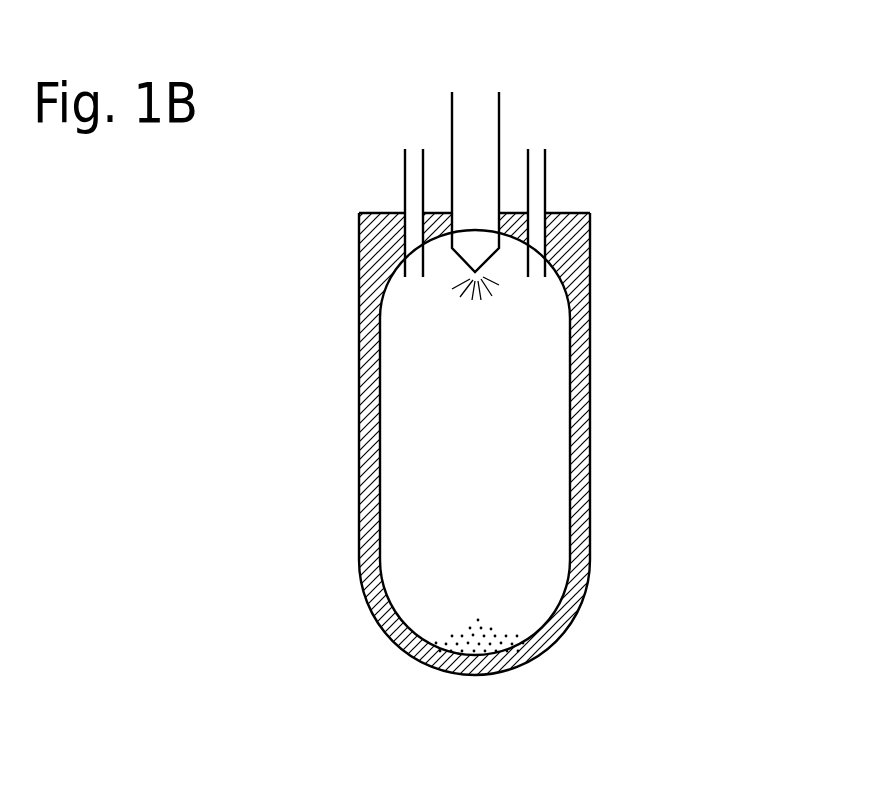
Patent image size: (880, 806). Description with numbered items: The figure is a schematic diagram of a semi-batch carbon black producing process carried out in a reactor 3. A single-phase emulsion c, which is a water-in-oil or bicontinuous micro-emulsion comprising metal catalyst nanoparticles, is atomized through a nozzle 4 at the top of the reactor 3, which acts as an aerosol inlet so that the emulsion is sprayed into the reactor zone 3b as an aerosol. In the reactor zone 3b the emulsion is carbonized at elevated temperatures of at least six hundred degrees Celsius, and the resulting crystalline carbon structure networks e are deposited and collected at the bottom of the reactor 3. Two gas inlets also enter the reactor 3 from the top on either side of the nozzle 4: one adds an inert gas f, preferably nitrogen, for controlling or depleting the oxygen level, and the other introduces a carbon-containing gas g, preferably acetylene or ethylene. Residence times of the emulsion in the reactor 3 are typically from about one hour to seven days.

The reactor 3 is at (604, 257).
The reactor zone 3b is at (462, 443).
The nozzle 4 is at (499, 115).
The single-phase emulsion c is at (476, 137).
The inert gas f is at (414, 163).
The carbon-containing gas g is at (537, 163).
The crystalline carbon structure networks e is at (480, 640).